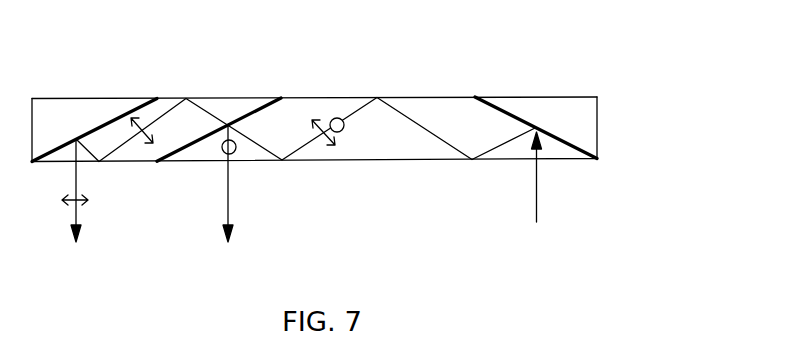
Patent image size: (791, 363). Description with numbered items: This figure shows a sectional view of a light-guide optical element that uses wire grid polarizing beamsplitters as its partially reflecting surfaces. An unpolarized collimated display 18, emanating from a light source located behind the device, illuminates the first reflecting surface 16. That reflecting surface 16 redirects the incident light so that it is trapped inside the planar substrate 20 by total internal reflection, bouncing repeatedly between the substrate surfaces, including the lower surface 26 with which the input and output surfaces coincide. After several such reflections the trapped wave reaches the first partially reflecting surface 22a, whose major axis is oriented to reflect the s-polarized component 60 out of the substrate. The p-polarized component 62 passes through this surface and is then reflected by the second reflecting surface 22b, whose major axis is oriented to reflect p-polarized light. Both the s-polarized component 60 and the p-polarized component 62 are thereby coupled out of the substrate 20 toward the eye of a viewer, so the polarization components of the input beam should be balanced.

The first reflecting surface 16 is at (578, 147).
The unpolarized collimated display 18 is at (540, 192).
The planar substrate 20 is at (514, 102).
The first partially reflecting surface 22a is at (258, 106).
The second reflecting surface 22b is at (141, 103).
The lower surface 26 is at (313, 162).
The s-polarized component 60 is at (243, 143).
The p-polarized component 62 is at (86, 210).